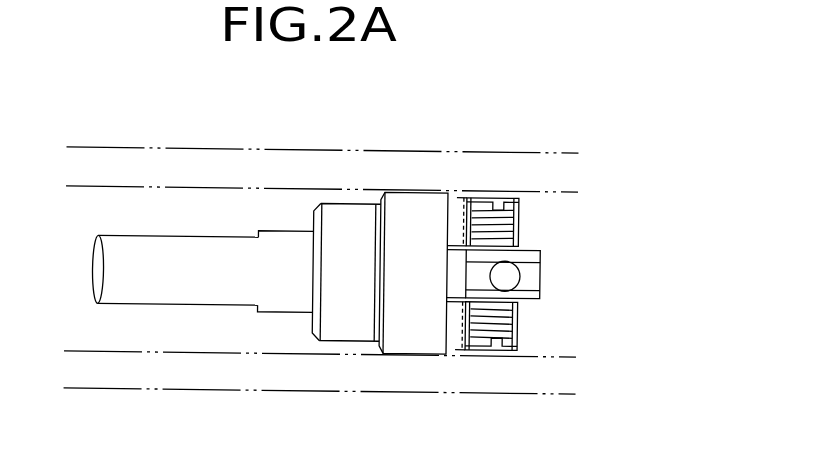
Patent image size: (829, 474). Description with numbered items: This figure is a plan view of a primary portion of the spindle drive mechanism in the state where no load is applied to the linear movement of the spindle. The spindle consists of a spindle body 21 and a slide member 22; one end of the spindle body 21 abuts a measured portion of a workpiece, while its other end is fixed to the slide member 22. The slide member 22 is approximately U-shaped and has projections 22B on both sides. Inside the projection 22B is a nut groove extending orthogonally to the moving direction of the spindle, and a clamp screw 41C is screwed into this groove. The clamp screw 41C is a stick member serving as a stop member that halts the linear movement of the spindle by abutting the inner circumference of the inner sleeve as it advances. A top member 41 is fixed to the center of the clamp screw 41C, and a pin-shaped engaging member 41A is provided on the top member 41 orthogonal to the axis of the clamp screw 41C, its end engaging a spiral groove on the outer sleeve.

The spindle body 21 is at (188, 252).
The slide member 22 is at (407, 203).
The projection 22B is at (457, 200).
The top member 41 is at (480, 282).
The engaging member 41A is at (513, 273).
The clamp screw 41C is at (505, 320).